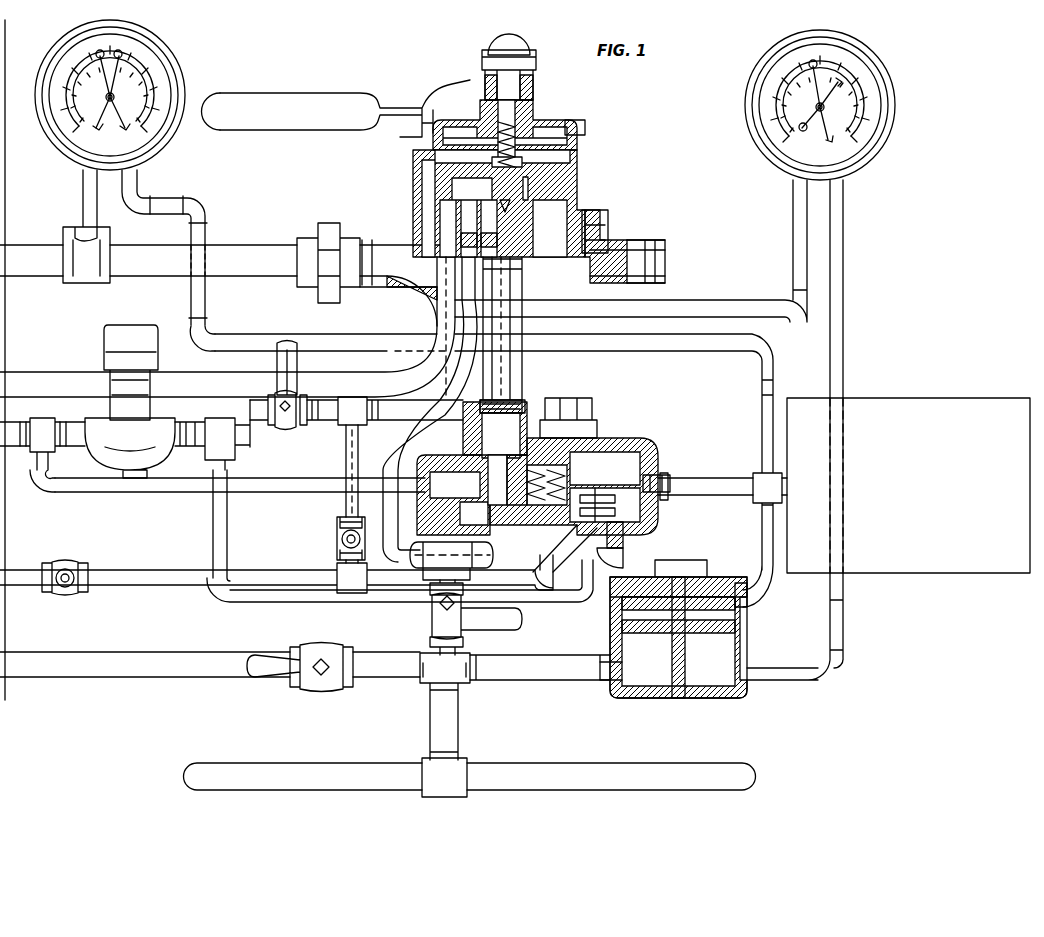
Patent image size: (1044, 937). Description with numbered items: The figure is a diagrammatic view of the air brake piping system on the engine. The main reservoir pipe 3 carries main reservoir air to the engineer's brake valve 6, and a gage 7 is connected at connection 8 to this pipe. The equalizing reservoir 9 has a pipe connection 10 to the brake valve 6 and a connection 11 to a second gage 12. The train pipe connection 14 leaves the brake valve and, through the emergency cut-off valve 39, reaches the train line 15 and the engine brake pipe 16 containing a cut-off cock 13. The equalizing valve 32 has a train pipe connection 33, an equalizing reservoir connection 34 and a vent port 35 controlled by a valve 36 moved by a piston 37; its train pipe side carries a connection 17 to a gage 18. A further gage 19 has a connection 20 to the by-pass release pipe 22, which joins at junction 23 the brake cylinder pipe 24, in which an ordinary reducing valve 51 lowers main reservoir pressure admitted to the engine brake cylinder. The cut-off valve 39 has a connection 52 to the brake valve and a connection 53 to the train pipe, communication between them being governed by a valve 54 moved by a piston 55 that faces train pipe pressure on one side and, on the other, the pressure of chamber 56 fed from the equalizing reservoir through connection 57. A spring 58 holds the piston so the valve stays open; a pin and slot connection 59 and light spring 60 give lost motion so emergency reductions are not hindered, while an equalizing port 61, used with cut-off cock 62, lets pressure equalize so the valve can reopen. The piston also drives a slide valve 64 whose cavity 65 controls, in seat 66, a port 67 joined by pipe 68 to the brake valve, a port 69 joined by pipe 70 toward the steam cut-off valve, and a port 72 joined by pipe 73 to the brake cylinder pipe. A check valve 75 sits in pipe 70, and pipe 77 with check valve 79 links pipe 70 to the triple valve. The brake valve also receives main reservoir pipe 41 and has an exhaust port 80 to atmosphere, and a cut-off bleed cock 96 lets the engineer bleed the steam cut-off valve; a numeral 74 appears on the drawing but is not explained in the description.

The main reservoir pipe 3 is at (227, 274).
The engineer's brake valve 6 is at (585, 130).
The gage 7 is at (112, 93).
The connection 8 is at (85, 226).
The equalizing reservoir 9 is at (908, 485).
The pipe connection 10 is at (628, 344).
The connection 11 is at (168, 202).
The gage 12 is at (102, 91).
The cut-off cock 13 is at (350, 684).
The train pipe connection 14 is at (458, 712).
The train line 15 is at (470, 776).
The engine brake pipe 16 is at (210, 664).
The connection 17 is at (843, 296).
The gage 18 is at (812, 92).
The gage 19 is at (806, 138).
The connection 20 is at (750, 306).
The by-pass release pipe 22 is at (522, 324).
The junction 23 is at (55, 422).
The brake cylinder pipe 24 is at (200, 440).
The equalizing valve 32 is at (747, 642).
The train pipe connection 33 is at (540, 667).
The equalizing reservoir connection 34 is at (770, 590).
The vent port 35 is at (678, 698).
The valve 36 is at (685, 666).
The piston 37 is at (648, 650).
The emergency cut-off valve 39 is at (640, 440).
The main reservoir pipe 41 is at (437, 300).
The reducing valve 51 is at (130, 401).
The connection 52 is at (540, 406).
The connection 53 is at (430, 537).
The valve 54 is at (501, 536).
The piston 55 is at (560, 462).
The chamber 56 is at (627, 471).
The connection 57 is at (700, 480).
The spring 58 is at (559, 515).
The pin and slot connection 59 is at (544, 507).
The light spring 60 is at (528, 470).
The equalizing port 61 is at (503, 462).
The cut-off cock 62 is at (430, 615).
The slide valve 64 is at (645, 498).
The cavity 65 is at (650, 512).
The seat 66 is at (645, 530).
The port 67 is at (623, 540).
The pipe 68 is at (383, 460).
The port 69 is at (585, 510).
The pipe 70 is at (352, 503).
The port 72 is at (565, 554).
The pipe 73 is at (220, 546).
The pipe 74 is at (522, 372).
The check valve 75 is at (337, 540).
The pipe 77 is at (165, 576).
The check valve 79 is at (58, 592).
The exhaust port 80 is at (631, 261).
The cut-off bleed cock 96 is at (292, 425).